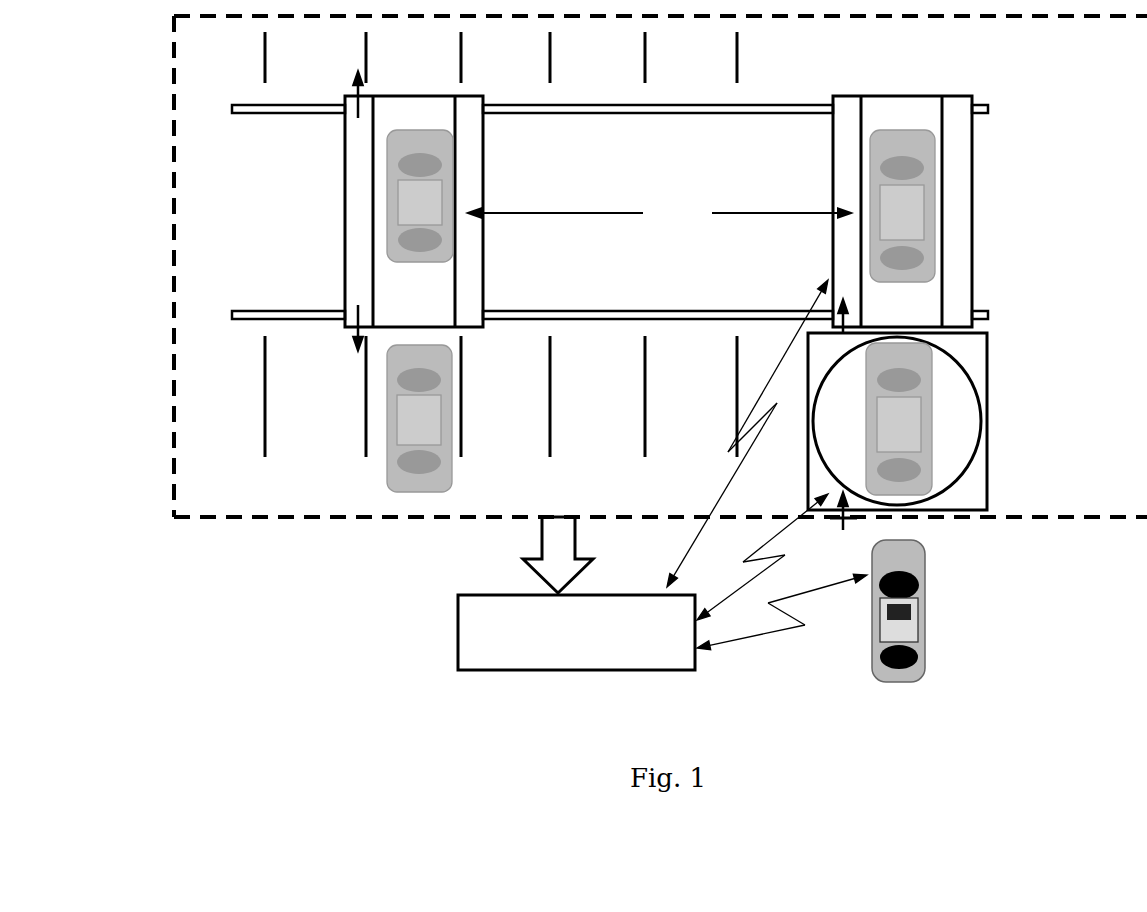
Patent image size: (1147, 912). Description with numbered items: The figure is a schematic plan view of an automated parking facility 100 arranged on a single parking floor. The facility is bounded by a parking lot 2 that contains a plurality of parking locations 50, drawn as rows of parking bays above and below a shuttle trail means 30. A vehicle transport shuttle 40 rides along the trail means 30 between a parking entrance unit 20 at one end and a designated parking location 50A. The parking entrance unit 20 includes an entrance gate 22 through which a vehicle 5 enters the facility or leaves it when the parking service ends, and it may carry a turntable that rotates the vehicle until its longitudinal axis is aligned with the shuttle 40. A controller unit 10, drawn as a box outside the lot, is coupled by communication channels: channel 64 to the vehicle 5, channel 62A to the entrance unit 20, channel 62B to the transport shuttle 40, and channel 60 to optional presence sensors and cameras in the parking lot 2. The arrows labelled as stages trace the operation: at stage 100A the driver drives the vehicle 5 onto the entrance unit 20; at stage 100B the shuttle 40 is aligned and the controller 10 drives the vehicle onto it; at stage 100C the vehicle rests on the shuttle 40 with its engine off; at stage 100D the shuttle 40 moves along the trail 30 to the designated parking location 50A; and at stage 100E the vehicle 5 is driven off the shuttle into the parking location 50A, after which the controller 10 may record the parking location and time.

The parking lot 2 is at (234, 505).
The vehicle 5 is at (872, 685).
The controller unit 10 is at (557, 655).
The parking entrance unit 20 is at (985, 460).
The entrance gate 22 is at (937, 497).
The shuttle trail means 30 is at (630, 181).
The vehicle transport shuttle 40 is at (928, 108).
The parking locations 50 is at (609, 397).
The designated parking location 50A is at (372, 416).
The communication channel to sensors 60 is at (558, 555).
The communication channel to entrance point unit 62A is at (740, 585).
The communication channel to transport shuttle 62B is at (715, 497).
The communication channel to vehicle 64 is at (777, 635).
The parking facility 100 is at (304, 572).
The entry stage 100A is at (954, 550).
The shuttle alignment and loading stage 100B is at (1008, 340).
The rest on shuttle stage 100C is at (1010, 176).
The shuttle travel stage 100D is at (659, 214).
The unloading stage 100E is at (370, 65).